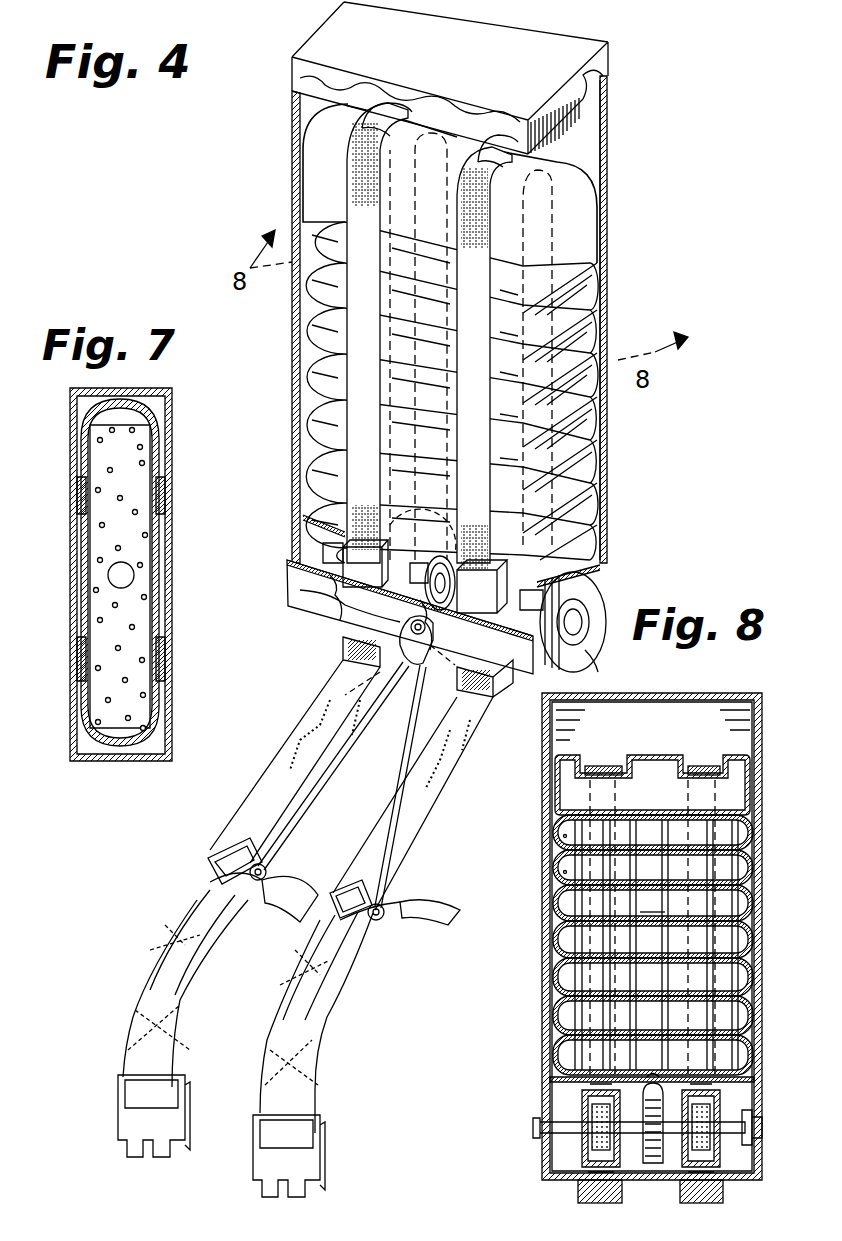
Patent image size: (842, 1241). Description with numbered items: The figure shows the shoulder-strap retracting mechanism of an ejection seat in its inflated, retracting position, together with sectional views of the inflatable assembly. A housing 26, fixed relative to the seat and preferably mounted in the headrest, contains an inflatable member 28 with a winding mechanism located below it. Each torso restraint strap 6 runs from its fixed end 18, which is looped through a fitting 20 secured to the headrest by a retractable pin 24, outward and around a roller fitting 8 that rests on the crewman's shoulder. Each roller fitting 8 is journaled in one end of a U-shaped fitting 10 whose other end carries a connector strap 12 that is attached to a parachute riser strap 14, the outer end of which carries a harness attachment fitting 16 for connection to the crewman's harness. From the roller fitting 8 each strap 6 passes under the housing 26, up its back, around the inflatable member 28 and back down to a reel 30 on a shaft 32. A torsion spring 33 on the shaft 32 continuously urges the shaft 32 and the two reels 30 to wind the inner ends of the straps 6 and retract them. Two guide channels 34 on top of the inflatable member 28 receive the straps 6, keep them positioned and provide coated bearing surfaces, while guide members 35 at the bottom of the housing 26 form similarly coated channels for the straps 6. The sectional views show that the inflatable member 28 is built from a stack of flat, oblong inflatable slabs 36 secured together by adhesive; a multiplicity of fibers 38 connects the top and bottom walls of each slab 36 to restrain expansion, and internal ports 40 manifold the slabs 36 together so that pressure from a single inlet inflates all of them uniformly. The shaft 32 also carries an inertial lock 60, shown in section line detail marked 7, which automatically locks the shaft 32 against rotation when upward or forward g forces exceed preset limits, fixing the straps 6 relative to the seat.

In FIG. 4, the torso restraint strap 6 is at (275, 795).
In FIG. 4, the section line 7— 7 is at (392, 115).
In FIG. 7, the section line 7— 7 is at (77, 460).
In FIG. 8, the section line 7— 7 is at (612, 758).
In FIG. 4, the roller fitting 8 is at (386, 906).
In FIG. 4, the U-shaped fitting 10 is at (210, 866).
In FIG. 4, the connector strap 12 is at (192, 906).
In FIG. 4, the parachute riser strap 14 is at (440, 906).
In FIG. 4, the harness attachment fitting 16 is at (118, 1118).
In FIG. 4, the fixed end 18 is at (430, 668).
In FIG. 4, the fitting 20 is at (345, 650).
In FIG. 4, the pin 24 is at (345, 600).
In FIG. 4, the housing 26 is at (583, 47).
In FIG. 7, the housing 26 is at (172, 436).
In FIG. 8, the housing 26 is at (680, 695).
In FIG. 4, the inflatable member 28 is at (590, 158).
In FIG. 8, the inflatable member 28 is at (750, 740).
In FIG. 4, the reel 30 is at (437, 576).
In FIG. 8, the reel 30 is at (582, 1105).
In FIG. 4, the shaft 32 is at (592, 615).
In FIG. 8, the shaft 32 is at (560, 1128).
In FIG. 4, the torsion spring 33 is at (412, 545).
In FIG. 8, the torsion spring 33 is at (652, 1170).
In FIG. 4, the guide channel 34 is at (372, 102).
In FIG. 8, the guide channel 34 is at (592, 756).
In FIG. 4, the guide member 35 is at (343, 645).
In FIG. 8, the guide member 35 is at (578, 1192).
In FIG. 4, the inflatable slab 36 is at (590, 290).
In FIG. 7, the inflatable slab 36 is at (158, 550).
In FIG. 8, the inflatable slab 36 is at (745, 835).
In FIG. 7, the fibers 38 is at (138, 512).
In FIG. 8, the fibers 38 is at (565, 872).
In FIG. 7, the internal port 40 is at (130, 576).
In FIG. 8, the internal port 40 is at (665, 912).
In FIG. 4, the inertial lock 60 is at (600, 656).
In FIG. 8, the inertial lock 60 is at (757, 1138).